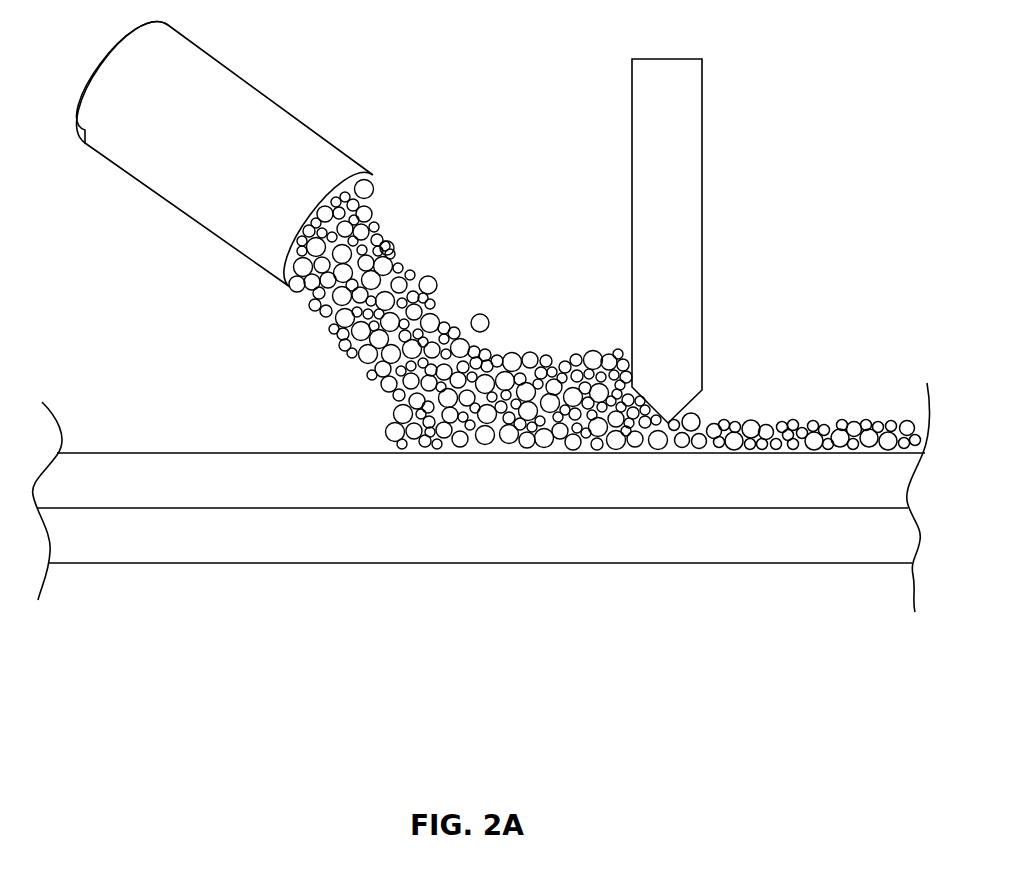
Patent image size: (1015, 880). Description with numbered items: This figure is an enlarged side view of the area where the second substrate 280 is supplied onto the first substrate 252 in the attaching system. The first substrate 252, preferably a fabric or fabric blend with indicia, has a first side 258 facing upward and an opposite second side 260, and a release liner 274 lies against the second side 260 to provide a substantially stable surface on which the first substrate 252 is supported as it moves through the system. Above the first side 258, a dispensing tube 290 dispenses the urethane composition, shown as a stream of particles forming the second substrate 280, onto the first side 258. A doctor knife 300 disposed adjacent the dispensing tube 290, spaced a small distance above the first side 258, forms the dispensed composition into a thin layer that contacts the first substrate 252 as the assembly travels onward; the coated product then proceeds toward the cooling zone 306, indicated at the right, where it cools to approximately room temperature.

The dispensing tube 290 is at (233, 92).
The doctor knife 300 is at (675, 225).
The second substrate 280 is at (427, 272).
The first substrate 252 is at (481, 454).
The first side 258 is at (237, 453).
The second side 260 is at (253, 508).
The release liner 274 is at (283, 538).
The cooling zone 306 is at (935, 427).